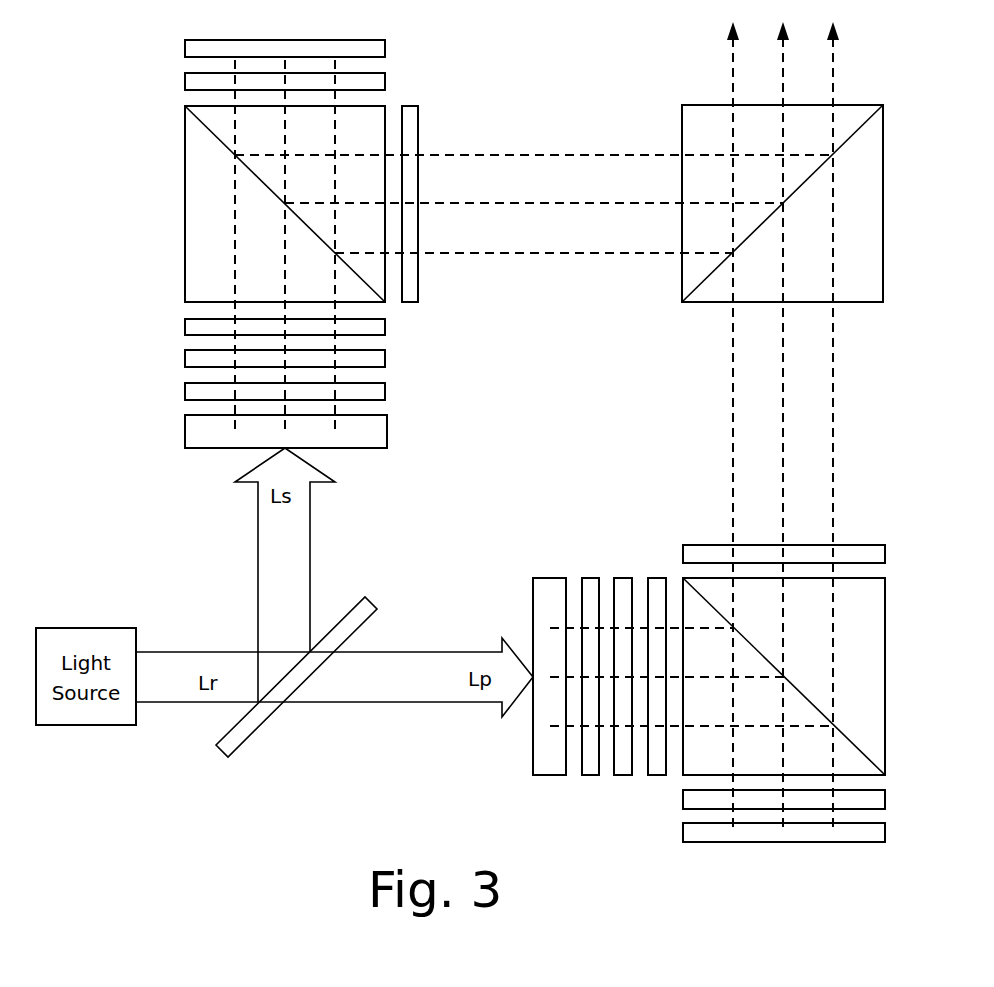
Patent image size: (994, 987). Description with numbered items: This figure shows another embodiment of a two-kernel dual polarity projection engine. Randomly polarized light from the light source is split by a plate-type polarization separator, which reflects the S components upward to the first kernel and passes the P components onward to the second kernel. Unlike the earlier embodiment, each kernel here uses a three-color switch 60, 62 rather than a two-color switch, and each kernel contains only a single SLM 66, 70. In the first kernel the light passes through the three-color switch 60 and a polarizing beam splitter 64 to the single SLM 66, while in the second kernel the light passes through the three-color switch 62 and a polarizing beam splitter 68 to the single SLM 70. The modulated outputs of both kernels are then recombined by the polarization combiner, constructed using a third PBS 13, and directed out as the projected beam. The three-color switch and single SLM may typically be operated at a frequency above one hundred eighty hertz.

The third PBS 13 is at (782, 203).
The three-color switch 60 is at (185, 430).
The three-color switch 62 is at (550, 578).
The polarizing beam splitter 64 is at (285, 204).
The single SLM 66 is at (385, 43).
The polarizing beam splitter 68 is at (784, 676).
The single SLM 70 is at (683, 828).